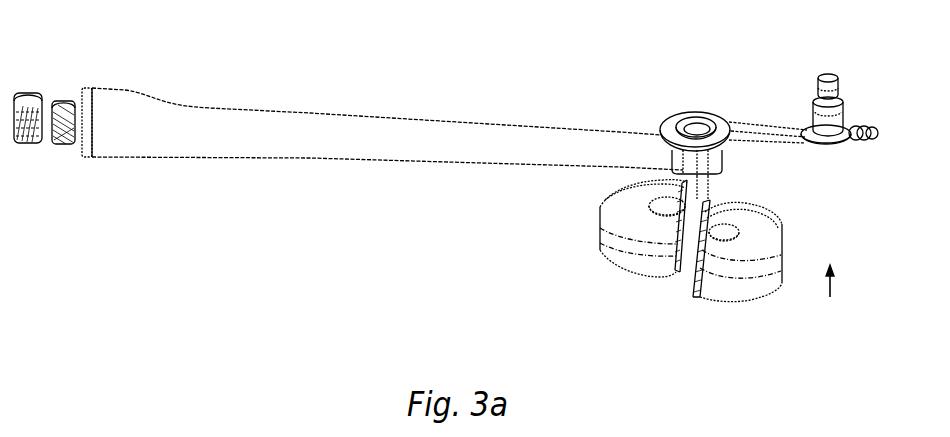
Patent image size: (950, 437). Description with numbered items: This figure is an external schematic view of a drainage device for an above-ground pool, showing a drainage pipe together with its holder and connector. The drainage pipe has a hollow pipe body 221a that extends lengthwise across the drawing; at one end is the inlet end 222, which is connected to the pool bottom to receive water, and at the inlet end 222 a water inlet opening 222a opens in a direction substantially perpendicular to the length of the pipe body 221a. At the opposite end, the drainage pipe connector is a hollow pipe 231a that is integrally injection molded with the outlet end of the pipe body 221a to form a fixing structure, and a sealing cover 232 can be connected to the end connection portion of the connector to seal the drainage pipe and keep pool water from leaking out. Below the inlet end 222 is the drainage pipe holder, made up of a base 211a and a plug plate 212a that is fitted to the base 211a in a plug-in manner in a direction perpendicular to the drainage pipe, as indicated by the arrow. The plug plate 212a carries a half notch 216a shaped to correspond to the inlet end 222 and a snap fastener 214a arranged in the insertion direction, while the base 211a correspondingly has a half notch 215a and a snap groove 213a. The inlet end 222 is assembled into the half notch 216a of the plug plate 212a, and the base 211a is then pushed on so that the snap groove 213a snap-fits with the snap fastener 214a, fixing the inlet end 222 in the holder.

The sealing cover 232 is at (27, 104).
The hollow pipe 231a is at (70, 140).
The pipe body 221a is at (320, 128).
The water inlet opening 222a is at (702, 128).
The inlet end 222 is at (713, 163).
The plug plate 212a is at (577, 261).
The base 211a is at (783, 252).
The snap groove 213a is at (700, 210).
The snap fastener 214a is at (675, 247).
The half notch 215a is at (720, 235).
The half notch 216a is at (660, 207).